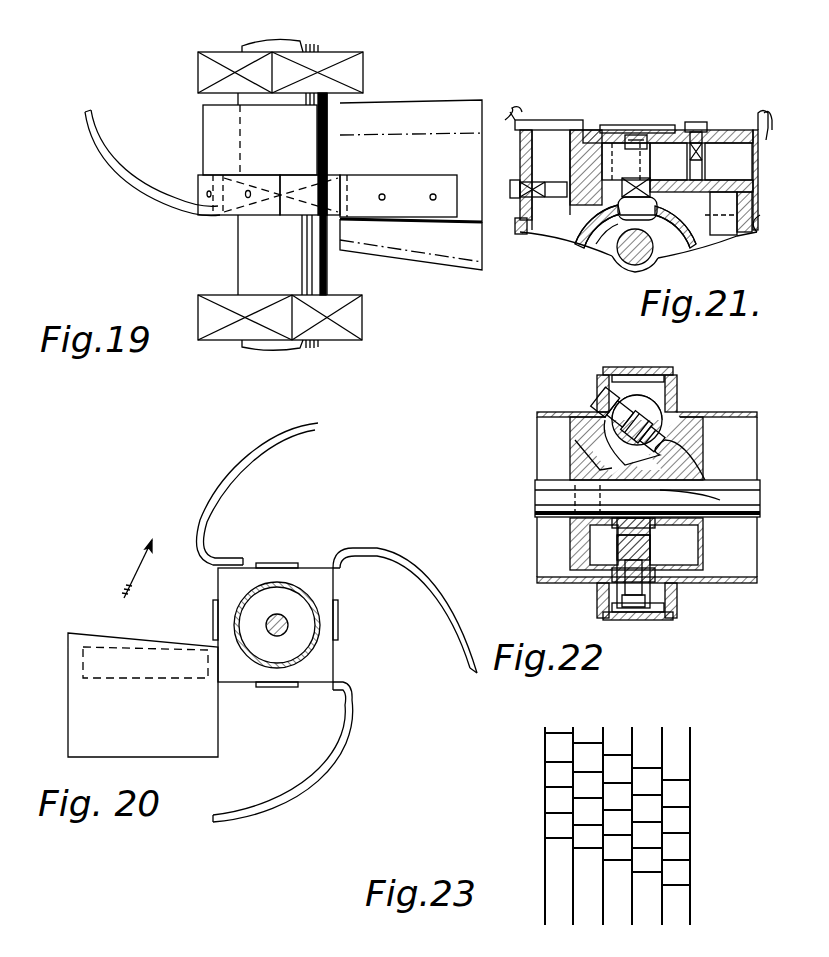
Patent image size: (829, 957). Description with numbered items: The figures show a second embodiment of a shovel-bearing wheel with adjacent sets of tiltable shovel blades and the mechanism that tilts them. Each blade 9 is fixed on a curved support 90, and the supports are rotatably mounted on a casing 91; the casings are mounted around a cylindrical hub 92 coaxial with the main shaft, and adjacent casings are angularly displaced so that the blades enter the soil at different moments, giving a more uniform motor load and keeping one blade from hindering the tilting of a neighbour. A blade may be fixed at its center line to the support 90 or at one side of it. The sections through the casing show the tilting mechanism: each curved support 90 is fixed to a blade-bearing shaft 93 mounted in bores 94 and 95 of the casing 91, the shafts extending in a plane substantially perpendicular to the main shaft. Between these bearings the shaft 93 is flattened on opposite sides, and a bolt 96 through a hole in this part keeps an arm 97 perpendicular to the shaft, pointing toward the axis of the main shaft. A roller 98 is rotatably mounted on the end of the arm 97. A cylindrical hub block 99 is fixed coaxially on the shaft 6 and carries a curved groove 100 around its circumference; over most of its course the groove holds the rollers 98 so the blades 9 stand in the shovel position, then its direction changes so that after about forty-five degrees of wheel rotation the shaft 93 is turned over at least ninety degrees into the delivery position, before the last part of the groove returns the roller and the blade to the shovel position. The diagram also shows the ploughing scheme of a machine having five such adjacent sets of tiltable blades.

In FIG. 20, the shaft 6 is at (282, 630).
In FIG. 21, the shaft 6 is at (630, 266).
In FIG. 22, the shaft 6 is at (537, 513).
In FIG. 19, the blade 9 is at (86, 113).
In FIG. 20, the blade 9 is at (318, 423).
In FIG. 19, the curved support 90 is at (148, 200).
In FIG. 20, the curved support 90 is at (394, 558).
In FIG. 21, the curved support 90 is at (516, 120).
In FIG. 19, the casing 91 is at (360, 45).
In FIG. 20, the casing 91 is at (320, 568).
In FIG. 21, the casing 91 is at (733, 135).
In FIG. 19, the cylindrical hub 92 is at (238, 263).
In FIG. 20, the cylindrical hub 92 is at (320, 628).
In FIG. 22, the cylindrical hub 92 is at (558, 412).
In FIG. 21, the blade-bearing shaft 93 is at (702, 126).
In FIG. 22, the blade-bearing shaft 93 is at (612, 402).
In FIG. 21, the bore 94 is at (740, 156).
In FIG. 21, the bore 95 is at (587, 174).
In FIG. 21, the bolt 96 is at (634, 128).
In FIG. 22, the bolt 96 is at (677, 396).
In FIG. 21, the arm 97 is at (668, 161).
In FIG. 22, the arm 97 is at (648, 479).
In FIG. 21, the roller 98 is at (651, 212).
In FIG. 22, the roller 98 is at (580, 452).
In FIG. 21, the cylindrical hub block 99 is at (672, 243).
In FIG. 22, the cylindrical hub block 99 is at (703, 540).
In FIG. 21, the curved groove 100 is at (600, 250).
In FIG. 22, the curved groove 100 is at (575, 442).